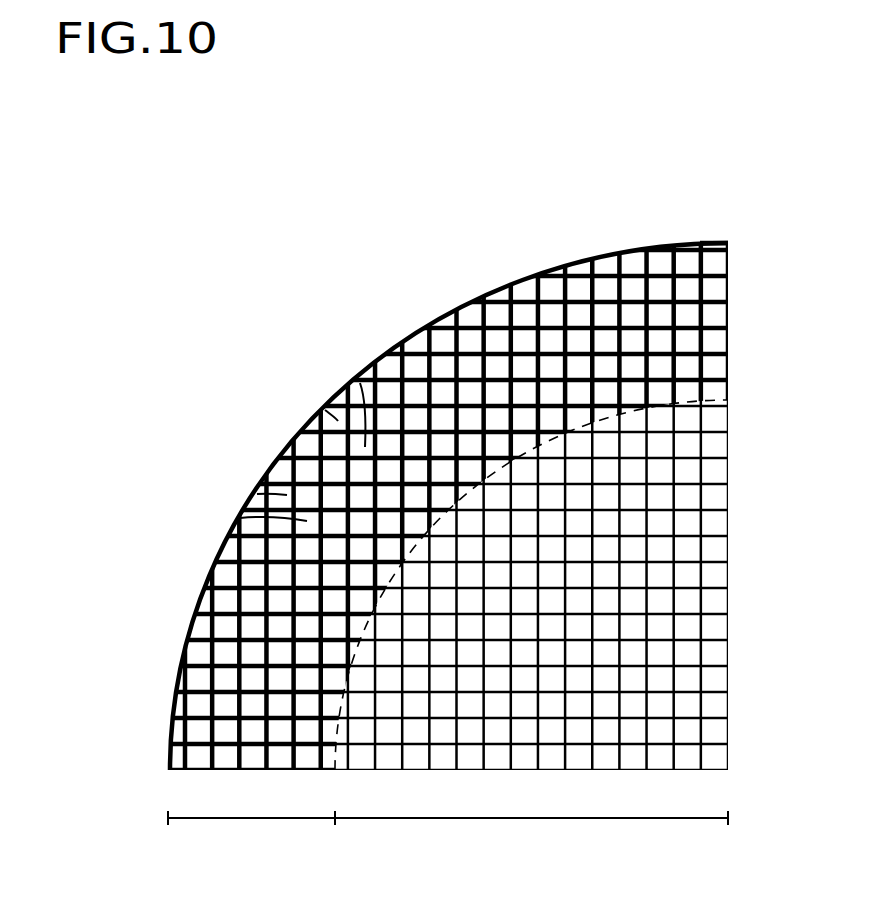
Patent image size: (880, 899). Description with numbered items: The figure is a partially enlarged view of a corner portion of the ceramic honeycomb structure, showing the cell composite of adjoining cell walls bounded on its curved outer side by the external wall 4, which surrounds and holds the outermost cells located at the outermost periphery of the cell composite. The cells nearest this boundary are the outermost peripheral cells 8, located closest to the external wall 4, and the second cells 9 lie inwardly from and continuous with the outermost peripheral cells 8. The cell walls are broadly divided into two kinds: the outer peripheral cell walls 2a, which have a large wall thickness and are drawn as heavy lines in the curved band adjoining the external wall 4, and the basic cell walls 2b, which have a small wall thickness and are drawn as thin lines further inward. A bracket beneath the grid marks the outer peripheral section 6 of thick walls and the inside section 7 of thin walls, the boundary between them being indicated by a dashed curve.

The outer peripheral cell wall 2a is at (512, 322).
The basic cell wall 2b is at (634, 484).
The external wall 4 is at (465, 303).
The outer peripheral section 6 is at (253, 846).
The inside section 7 is at (531, 834).
The outermost peripheral cell 8 is at (326, 410).
The second cell 9 is at (360, 383).